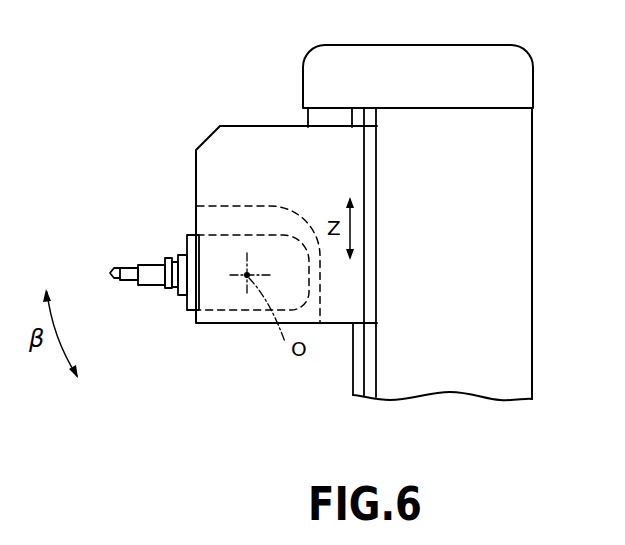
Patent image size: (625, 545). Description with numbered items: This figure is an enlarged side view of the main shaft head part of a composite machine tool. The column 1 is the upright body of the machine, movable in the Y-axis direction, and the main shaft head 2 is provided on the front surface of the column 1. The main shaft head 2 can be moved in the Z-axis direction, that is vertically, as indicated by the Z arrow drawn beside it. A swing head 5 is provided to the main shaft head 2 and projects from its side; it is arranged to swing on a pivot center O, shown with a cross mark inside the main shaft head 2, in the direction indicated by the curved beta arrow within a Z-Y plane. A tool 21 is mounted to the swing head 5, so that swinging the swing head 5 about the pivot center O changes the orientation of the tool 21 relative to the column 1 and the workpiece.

The column 1 is at (502, 240).
The main shaft head 2 is at (248, 142).
The swing head 5 is at (185, 305).
The tool 21 is at (117, 287).